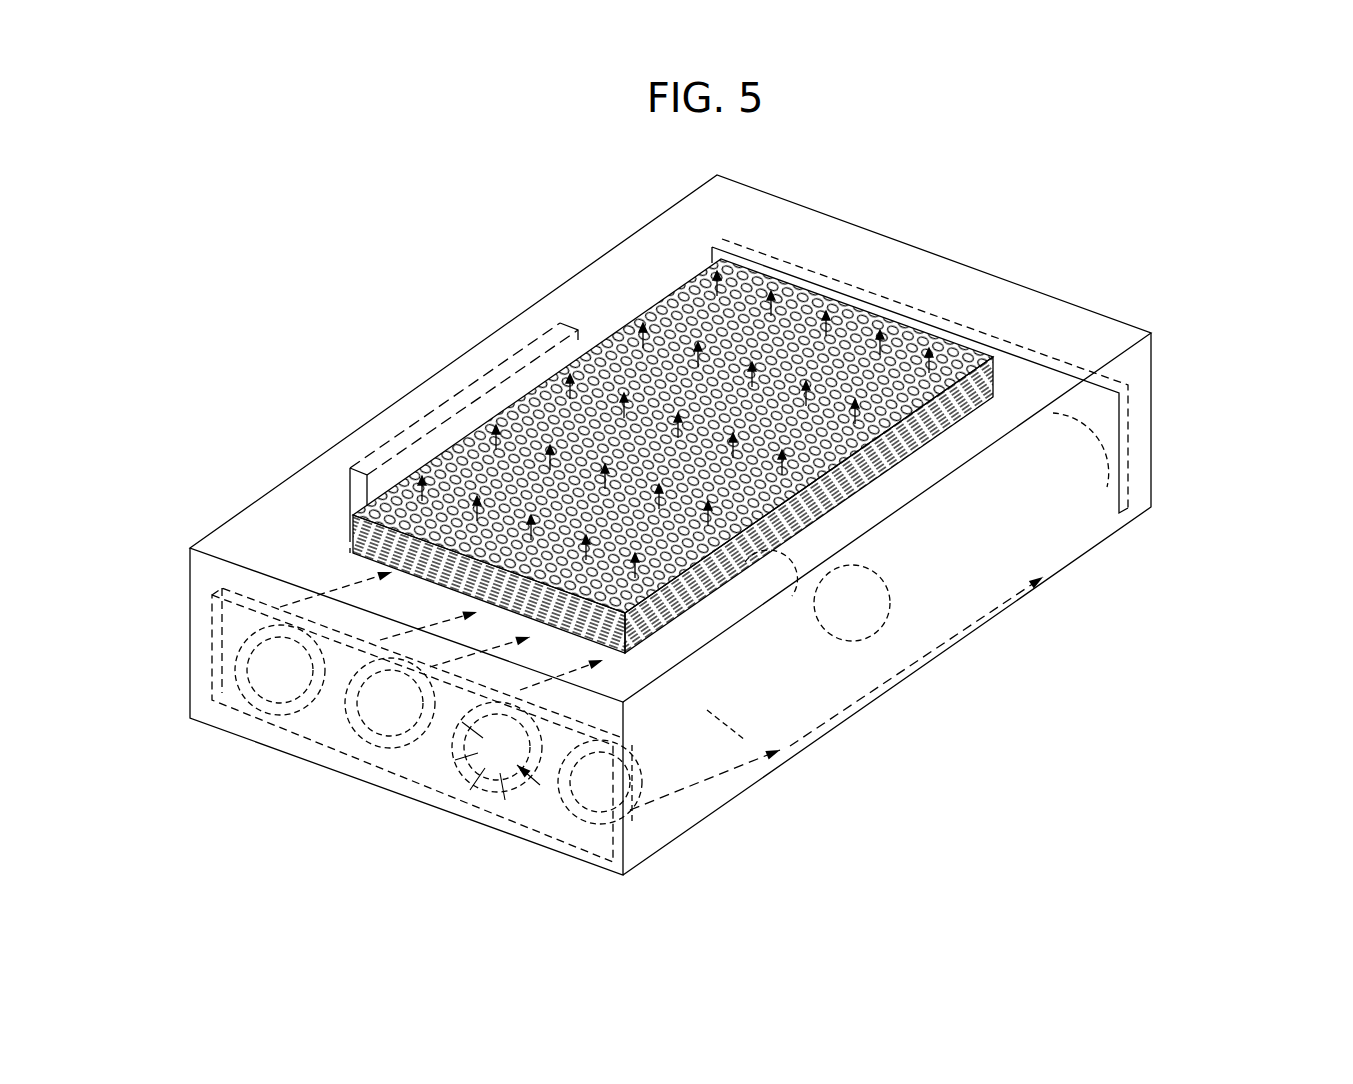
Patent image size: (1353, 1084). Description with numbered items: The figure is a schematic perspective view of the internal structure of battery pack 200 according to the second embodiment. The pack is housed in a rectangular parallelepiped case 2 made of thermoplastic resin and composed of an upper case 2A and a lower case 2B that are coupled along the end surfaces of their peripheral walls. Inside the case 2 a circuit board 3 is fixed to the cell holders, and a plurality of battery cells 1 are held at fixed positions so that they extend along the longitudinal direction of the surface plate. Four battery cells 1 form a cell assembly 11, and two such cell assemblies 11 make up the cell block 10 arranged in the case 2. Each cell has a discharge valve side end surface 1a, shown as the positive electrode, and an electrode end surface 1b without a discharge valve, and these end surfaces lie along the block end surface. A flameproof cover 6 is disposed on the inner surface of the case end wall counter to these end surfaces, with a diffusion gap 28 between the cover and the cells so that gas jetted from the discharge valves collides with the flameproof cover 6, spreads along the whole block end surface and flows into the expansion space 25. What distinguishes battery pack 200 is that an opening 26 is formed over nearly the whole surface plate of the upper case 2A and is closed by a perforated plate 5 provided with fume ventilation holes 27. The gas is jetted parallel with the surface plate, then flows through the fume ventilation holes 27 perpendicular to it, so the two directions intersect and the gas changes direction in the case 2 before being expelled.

The battery pack 200 is at (258, 262).
The case 2 is at (1280, 195).
The upper case 2A is at (1068, 256).
The lower case 2B is at (1204, 471).
The circuit board 3 is at (443, 407).
The perforated plate 5 is at (808, 293).
The opening 26 is at (618, 312).
The fume ventilation holes 27 is at (678, 297).
The flameproof cover 6 is at (977, 335).
The battery cell 1 is at (1033, 512).
The discharge valve side end surface 1a is at (597, 783).
The electrode end surface 1b is at (280, 673).
The expansion space 25 is at (380, 707).
The diffusion gap 28 is at (680, 795).
The cell block 10 is at (947, 837).
The cell assembly 11 is at (1043, 583).